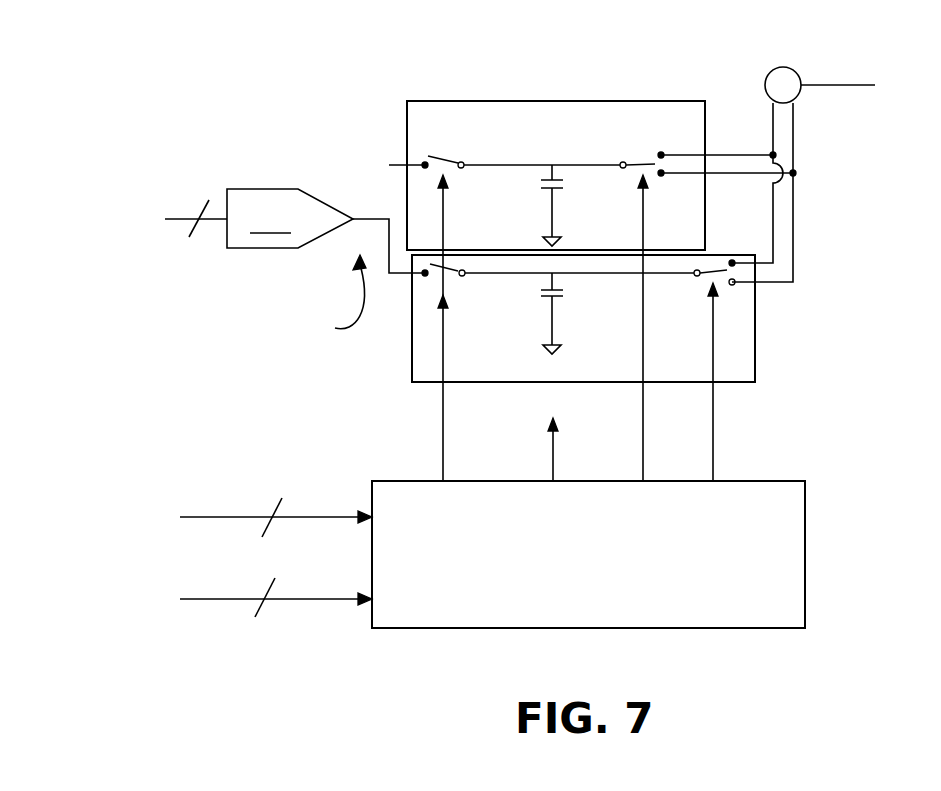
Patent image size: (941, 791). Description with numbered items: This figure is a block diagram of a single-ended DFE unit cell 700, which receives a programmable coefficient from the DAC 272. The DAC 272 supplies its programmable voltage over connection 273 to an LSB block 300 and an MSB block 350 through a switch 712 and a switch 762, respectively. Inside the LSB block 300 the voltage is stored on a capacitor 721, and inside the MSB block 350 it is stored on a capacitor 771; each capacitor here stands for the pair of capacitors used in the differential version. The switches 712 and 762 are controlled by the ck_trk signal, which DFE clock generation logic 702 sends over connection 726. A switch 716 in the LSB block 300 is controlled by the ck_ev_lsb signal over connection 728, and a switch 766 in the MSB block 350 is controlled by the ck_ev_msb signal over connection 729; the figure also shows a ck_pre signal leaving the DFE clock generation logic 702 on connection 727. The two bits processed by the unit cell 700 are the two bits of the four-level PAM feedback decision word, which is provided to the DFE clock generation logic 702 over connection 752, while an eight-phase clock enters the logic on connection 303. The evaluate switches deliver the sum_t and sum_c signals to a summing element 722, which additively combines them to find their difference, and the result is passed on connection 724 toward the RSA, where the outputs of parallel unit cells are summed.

The DFE unit cell 700 is at (288, 54).
The DAC 272 is at (290, 240).
The connection 273 is at (373, 217).
The LSB block 300 is at (455, 133).
The switch 712 is at (463, 162).
The switch 716 is at (640, 161).
The capacitor 721 is at (557, 190).
The MSB block 350 is at (500, 380).
The switch 762 is at (447, 275).
The switch 766 is at (707, 278).
The capacitor 771 is at (557, 296).
The summing element 722 is at (784, 66).
The RSA output 724 is at (818, 88).
The DFE clock generation logic 702 is at (427, 617).
The connection 726 is at (443, 408).
The ck_pre clock 727 is at (553, 447).
The connection 728 is at (643, 410).
The connection 729 is at (713, 410).
The connection 752 is at (331, 515).
The 8 phase clock 303 is at (322, 602).